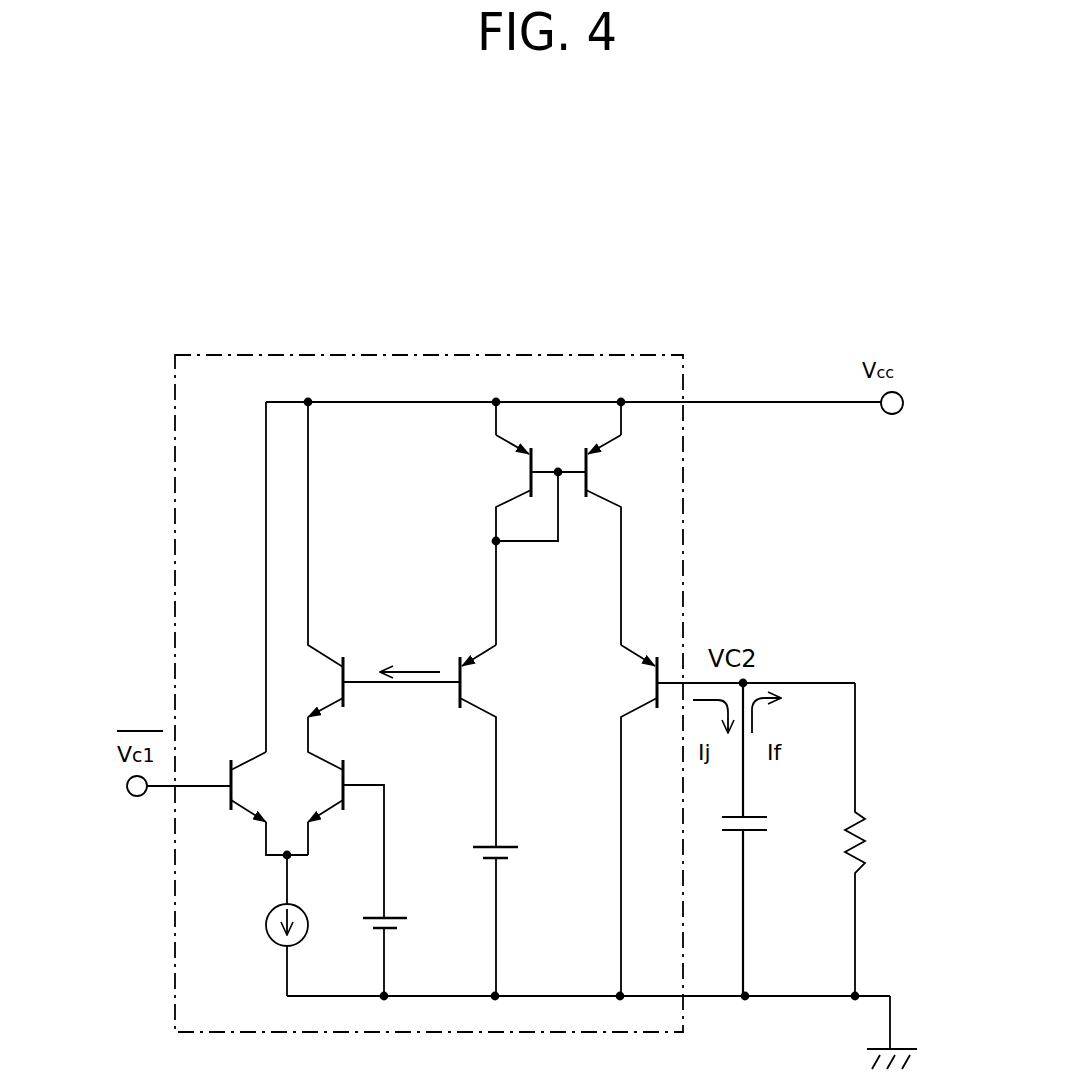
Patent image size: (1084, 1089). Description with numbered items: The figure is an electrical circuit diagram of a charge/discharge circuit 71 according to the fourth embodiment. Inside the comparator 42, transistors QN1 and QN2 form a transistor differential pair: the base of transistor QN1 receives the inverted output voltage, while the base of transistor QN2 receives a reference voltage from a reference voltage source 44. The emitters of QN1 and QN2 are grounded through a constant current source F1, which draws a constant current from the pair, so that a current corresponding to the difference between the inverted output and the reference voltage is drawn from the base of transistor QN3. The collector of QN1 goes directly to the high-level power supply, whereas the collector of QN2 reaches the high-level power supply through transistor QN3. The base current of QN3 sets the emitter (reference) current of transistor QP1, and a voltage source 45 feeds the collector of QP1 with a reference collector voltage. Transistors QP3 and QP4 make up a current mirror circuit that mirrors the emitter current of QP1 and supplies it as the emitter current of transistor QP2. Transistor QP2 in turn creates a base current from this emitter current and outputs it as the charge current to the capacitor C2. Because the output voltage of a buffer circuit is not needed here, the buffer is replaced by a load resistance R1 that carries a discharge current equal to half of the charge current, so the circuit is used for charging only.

The charge/discharge circuit 71 is at (364, 207).
The comparator 42 is at (414, 355).
The reference voltage source 44 is at (386, 912).
The voltage source 45 is at (500, 846).
The transistor QN1 is at (231, 806).
The transistor QN2 is at (345, 775).
The transistor QN3 is at (343, 664).
The transistor QP1 is at (478, 707).
The transistor QP2 is at (652, 690).
The transistor QP3 is at (508, 496).
The transistor QP4 is at (585, 487).
The constant current source F1 is at (266, 925).
The capacitor C2 is at (745, 833).
The load resistance R1 is at (862, 815).